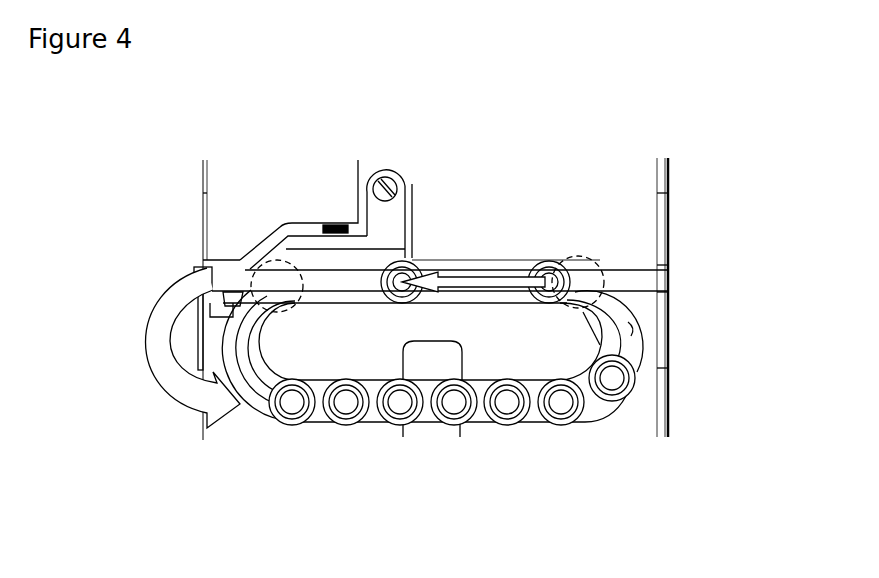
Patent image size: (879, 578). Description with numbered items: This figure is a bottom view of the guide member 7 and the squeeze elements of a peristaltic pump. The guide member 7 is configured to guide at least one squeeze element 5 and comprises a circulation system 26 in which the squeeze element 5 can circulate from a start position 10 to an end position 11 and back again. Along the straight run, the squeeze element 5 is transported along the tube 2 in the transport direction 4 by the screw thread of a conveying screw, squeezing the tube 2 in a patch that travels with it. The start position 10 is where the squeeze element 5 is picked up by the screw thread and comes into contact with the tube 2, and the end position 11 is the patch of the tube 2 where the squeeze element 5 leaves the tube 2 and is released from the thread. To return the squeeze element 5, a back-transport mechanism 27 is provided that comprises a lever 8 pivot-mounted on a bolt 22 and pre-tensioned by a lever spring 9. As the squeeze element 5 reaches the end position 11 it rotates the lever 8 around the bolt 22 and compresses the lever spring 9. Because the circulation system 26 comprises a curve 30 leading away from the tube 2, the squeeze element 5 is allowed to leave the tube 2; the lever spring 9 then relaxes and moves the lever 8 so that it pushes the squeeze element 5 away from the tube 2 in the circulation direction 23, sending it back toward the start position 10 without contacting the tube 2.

The tube 2 is at (587, 282).
The transport direction 4 is at (457, 283).
The squeeze element 5 is at (397, 297).
The guide member 7 is at (640, 408).
The lever 8 is at (286, 252).
The lever spring 9 is at (333, 224).
The start position 10 is at (607, 278).
The end position 11 is at (200, 291).
The bolt 22 is at (393, 184).
The circulation direction 23 is at (172, 378).
The circulation system 26 is at (257, 400).
The back-transport mechanism 27 is at (268, 236).
The curve 30 is at (220, 366).